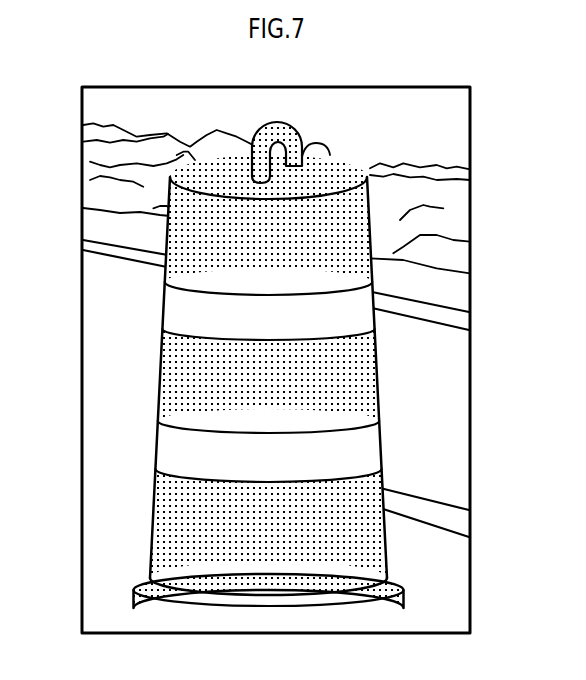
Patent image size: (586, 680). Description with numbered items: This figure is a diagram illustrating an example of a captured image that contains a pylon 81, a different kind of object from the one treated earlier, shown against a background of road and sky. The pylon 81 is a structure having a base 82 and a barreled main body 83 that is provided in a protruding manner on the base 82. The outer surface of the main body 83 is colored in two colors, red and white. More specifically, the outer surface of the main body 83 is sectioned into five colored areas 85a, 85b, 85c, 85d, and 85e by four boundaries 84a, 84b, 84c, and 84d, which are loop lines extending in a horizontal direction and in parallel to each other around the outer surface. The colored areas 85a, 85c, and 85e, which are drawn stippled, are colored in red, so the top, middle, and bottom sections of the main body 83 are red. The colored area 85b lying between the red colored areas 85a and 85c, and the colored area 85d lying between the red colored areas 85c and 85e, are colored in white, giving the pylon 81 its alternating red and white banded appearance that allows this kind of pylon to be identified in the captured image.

The pylon 81 is at (143, 358).
The base 82 is at (137, 600).
The main body 83 is at (162, 340).
The boundary 84a is at (330, 293).
The boundary 84b is at (343, 337).
The boundary 84c is at (337, 430).
The boundary 84d is at (343, 479).
The colored area 85a is at (320, 207).
The colored area 85b is at (180, 301).
The colored area 85c is at (357, 380).
The colored area 85d is at (173, 443).
The colored area 85e is at (170, 512).